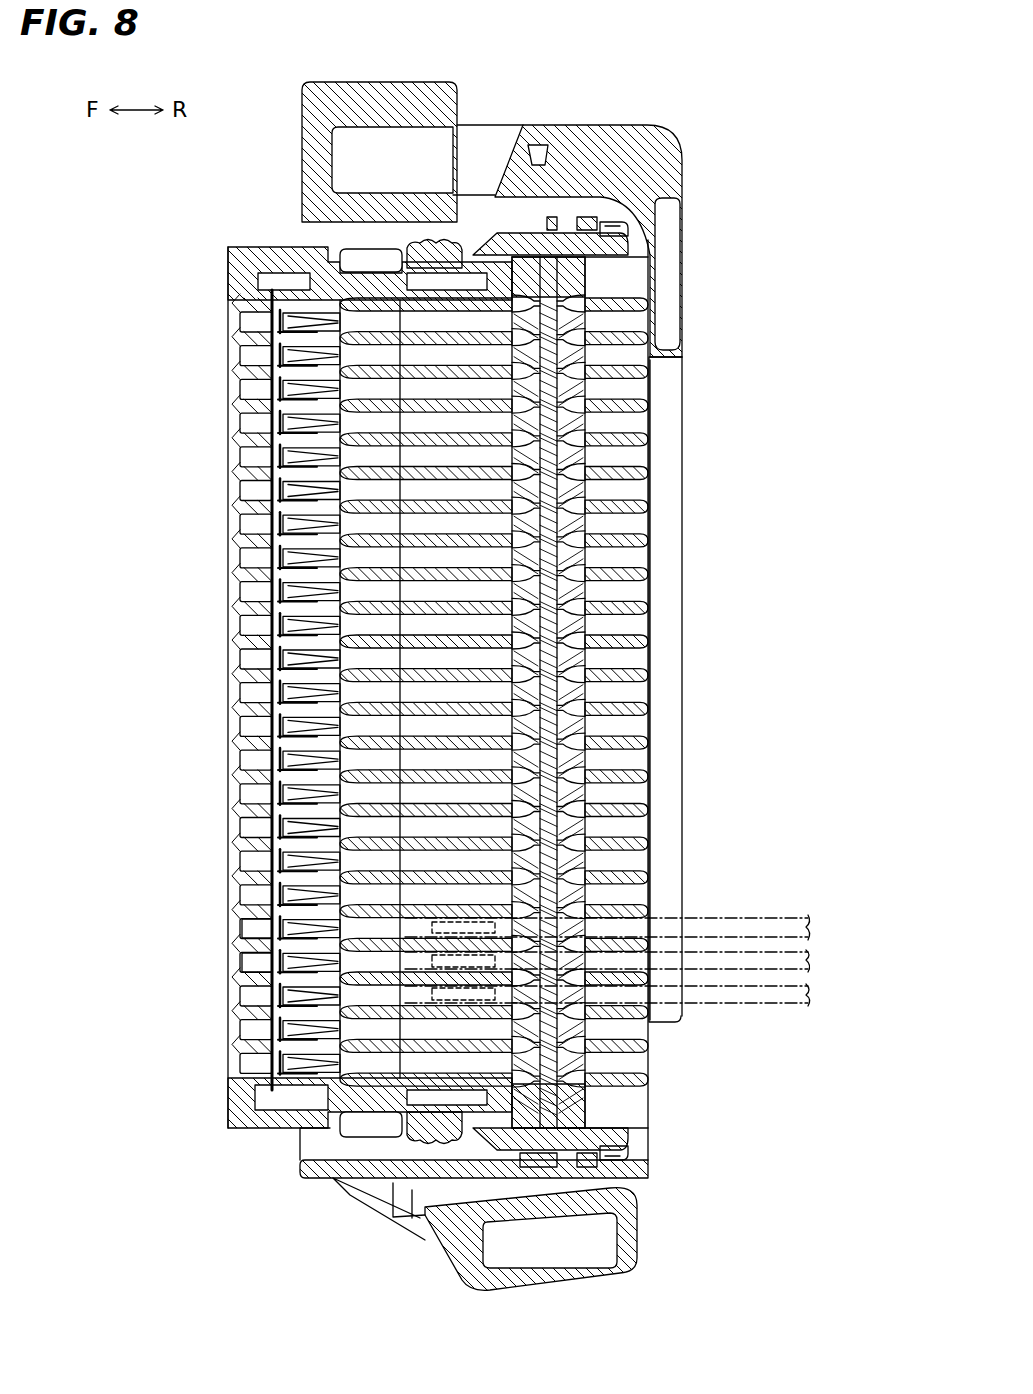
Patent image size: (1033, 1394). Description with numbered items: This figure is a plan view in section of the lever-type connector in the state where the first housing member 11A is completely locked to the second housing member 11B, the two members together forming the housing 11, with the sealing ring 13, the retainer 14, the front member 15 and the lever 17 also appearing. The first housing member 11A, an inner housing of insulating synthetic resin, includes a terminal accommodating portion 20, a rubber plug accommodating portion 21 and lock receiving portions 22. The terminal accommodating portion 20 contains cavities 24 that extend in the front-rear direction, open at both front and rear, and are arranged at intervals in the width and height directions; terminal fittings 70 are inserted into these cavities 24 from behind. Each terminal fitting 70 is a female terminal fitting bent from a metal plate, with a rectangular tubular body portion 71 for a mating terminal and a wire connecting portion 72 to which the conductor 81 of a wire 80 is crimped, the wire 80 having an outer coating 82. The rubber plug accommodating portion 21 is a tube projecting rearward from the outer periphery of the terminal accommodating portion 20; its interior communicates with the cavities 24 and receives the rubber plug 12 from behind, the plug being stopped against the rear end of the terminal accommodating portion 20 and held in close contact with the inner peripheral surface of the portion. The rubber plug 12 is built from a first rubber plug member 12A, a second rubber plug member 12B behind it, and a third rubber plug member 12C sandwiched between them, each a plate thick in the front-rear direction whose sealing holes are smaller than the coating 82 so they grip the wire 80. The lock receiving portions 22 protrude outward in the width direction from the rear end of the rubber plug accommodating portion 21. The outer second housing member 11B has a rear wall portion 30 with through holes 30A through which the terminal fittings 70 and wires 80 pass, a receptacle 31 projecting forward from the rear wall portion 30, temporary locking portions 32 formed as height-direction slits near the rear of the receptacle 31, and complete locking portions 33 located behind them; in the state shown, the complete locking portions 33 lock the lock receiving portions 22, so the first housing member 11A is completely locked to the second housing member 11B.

The housing 11 is at (331, 609).
The first housing member 11A is at (348, 287).
The second housing member 11B is at (318, 168).
The rubber plug 12 is at (668, 692).
The first rubber plug member 12A is at (548, 471).
The second rubber plug member 12B is at (560, 512).
The third rubber plug member 12C is at (520, 497).
The sealing ring 13 is at (443, 253).
The retainer 14 is at (355, 661).
The front member 15 is at (228, 603).
The lever 17 is at (630, 1240).
The terminal accommodating portion 20 is at (387, 1097).
The rubber plug accommodating portion 21 is at (540, 240).
The lock receiving portion 22 is at (613, 232).
The cavity 24 is at (415, 1030).
The rear wall portion 30 is at (702, 686).
The through hole 30A is at (630, 432).
The receptacle 31 is at (417, 1183).
The temporary locking portion 32 is at (558, 222).
The complete locking portion 33 is at (612, 222).
The terminal fitting 70 is at (186, 947).
The body portion 71 is at (250, 926).
The wire connecting portion 72 is at (248, 958).
The wire 80 is at (642, 894).
The conductor 81 is at (467, 920).
The coating 82 is at (700, 923).